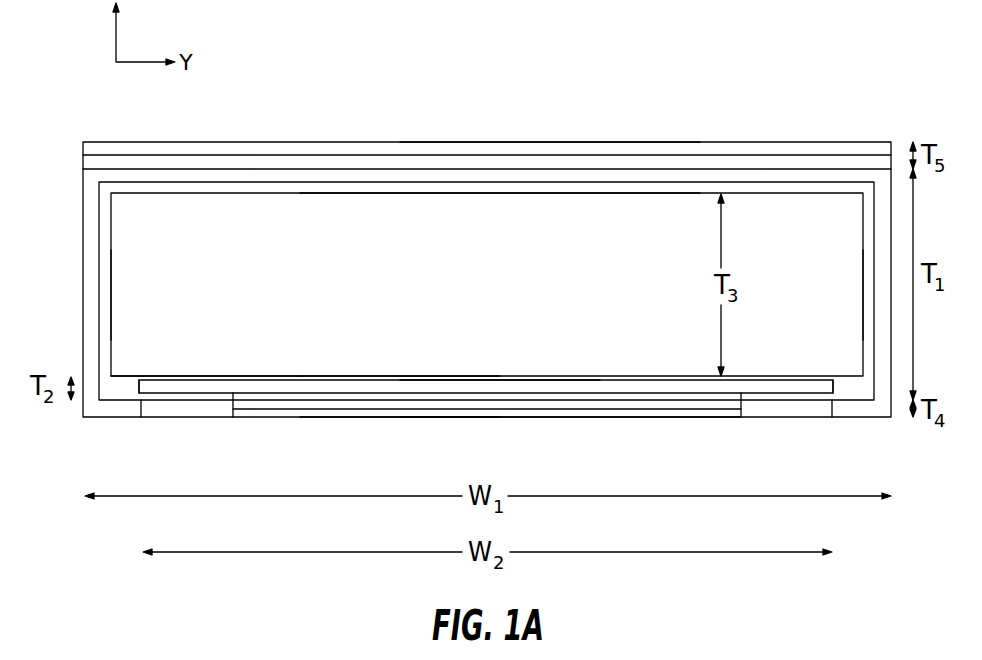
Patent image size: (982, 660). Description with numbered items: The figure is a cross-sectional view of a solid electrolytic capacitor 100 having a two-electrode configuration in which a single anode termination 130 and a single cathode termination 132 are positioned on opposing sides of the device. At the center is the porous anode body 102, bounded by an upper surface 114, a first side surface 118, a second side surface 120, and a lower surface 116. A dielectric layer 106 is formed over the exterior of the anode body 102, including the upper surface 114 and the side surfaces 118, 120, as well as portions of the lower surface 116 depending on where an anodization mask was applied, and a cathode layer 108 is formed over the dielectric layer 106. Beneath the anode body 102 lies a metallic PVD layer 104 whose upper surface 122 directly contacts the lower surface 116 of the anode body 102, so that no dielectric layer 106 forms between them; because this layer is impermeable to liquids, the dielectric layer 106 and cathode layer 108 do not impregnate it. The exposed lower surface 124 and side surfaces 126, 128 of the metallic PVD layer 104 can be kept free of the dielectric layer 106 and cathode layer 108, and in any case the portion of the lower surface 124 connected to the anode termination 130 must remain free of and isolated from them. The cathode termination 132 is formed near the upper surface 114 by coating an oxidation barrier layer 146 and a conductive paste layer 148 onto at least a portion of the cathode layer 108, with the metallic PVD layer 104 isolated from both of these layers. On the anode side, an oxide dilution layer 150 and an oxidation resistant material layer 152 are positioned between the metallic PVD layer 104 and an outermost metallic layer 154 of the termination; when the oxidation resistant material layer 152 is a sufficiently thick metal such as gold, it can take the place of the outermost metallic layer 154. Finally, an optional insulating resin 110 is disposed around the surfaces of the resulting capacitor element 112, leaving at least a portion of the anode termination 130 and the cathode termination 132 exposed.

The solid electrolytic capacitor 100 is at (811, 91).
The anode body 102 is at (413, 300).
The metallic PVD layer 104 is at (307, 383).
The dielectric layer 106 is at (496, 185).
The cathode layer 108 is at (395, 175).
The insulating resin 110 is at (180, 407).
The capacitor element 112 is at (83, 141).
The upper surface 114 is at (648, 195).
The lower surface 116 is at (255, 376).
The first side surface 118 is at (112, 292).
The second side surface 120 is at (863, 293).
The upper surface 122 is at (365, 377).
The lower surface 124 is at (490, 388).
The side surface 126 is at (138, 381).
The side surface 128 is at (835, 382).
The anode termination 130 is at (449, 423).
The cathode termination 132 is at (547, 138).
The oxidation barrier layer 146 is at (250, 162).
The conductive paste layer 148 is at (292, 147).
The oxide dilution layer 150 is at (377, 398).
The oxidation resistant material layer 152 is at (578, 406).
The outermost metallic layer 154 is at (655, 415).